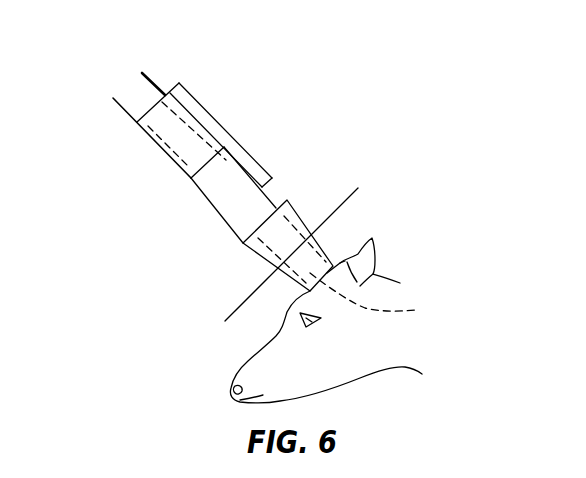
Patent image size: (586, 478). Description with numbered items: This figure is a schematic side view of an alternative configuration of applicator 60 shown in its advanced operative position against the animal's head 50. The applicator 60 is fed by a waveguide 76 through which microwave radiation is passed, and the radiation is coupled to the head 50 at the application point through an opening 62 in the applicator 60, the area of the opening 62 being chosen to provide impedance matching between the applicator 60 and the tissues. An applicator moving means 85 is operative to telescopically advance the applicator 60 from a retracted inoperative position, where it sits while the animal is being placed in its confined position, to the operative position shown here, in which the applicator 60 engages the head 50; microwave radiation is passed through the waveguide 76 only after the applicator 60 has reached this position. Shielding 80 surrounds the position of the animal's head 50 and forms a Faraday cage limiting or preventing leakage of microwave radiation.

The animal's head 50 is at (255, 360).
The applicator 60 is at (317, 256).
The opening 62 is at (377, 299).
The waveguide 76 is at (137, 100).
The shielding 80 is at (246, 300).
The applicator moving means 85 is at (236, 142).